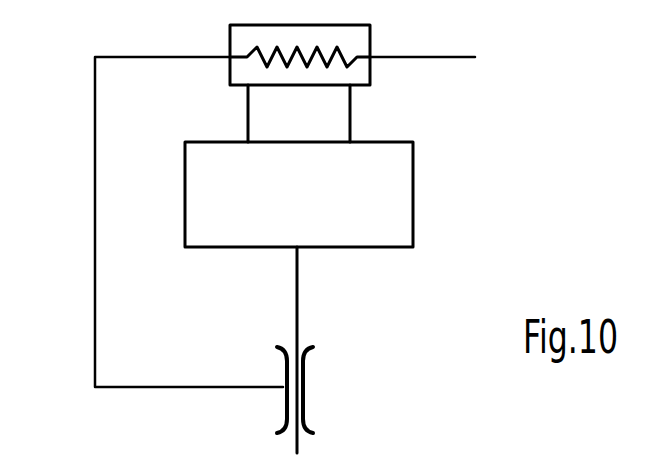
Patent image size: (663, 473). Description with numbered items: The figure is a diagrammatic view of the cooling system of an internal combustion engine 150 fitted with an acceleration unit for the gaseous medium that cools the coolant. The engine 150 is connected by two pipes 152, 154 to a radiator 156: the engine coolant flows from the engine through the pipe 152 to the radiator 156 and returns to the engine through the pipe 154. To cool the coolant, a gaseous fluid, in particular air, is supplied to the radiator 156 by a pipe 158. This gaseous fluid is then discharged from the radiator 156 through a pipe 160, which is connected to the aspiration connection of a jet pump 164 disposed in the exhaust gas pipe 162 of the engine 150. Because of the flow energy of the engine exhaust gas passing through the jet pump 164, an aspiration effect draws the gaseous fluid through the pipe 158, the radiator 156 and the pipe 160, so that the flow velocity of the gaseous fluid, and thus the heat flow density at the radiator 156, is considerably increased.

The internal combustion engine 150 is at (413, 217).
The pipe 152 is at (249, 111).
The pipe 154 is at (351, 111).
The radiator 156 is at (370, 32).
The pipe 158 is at (460, 59).
The pipe 160 is at (95, 295).
The exhaust gas pipe 162 is at (298, 293).
The jet pump 164 is at (307, 393).